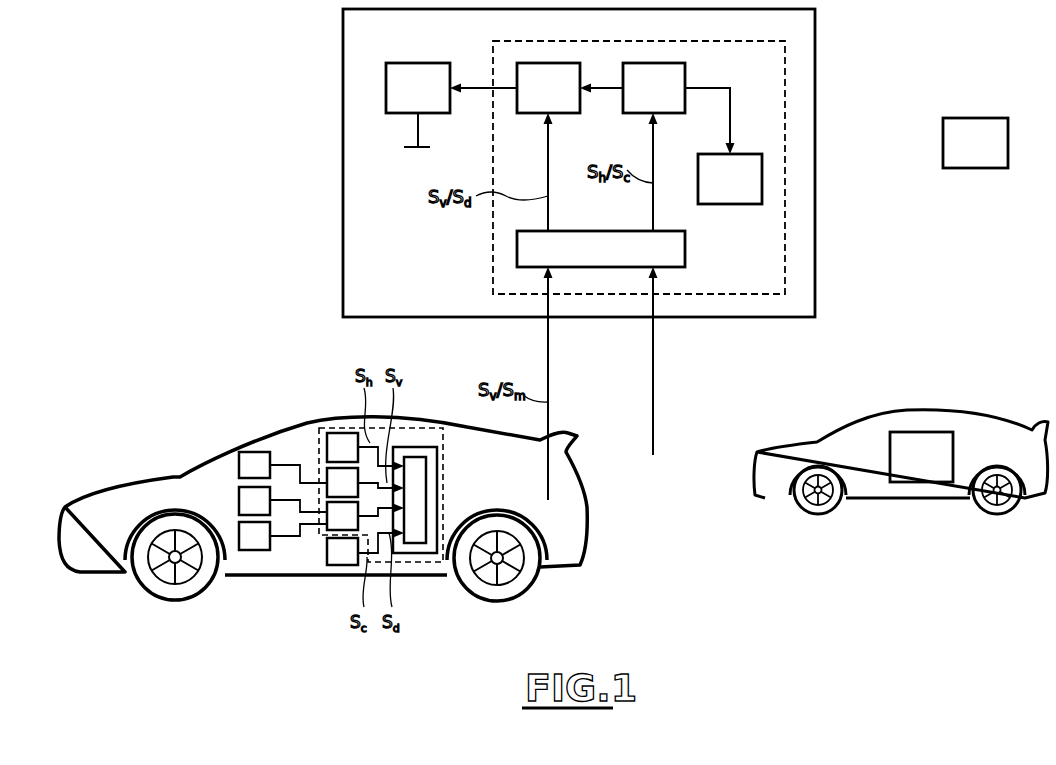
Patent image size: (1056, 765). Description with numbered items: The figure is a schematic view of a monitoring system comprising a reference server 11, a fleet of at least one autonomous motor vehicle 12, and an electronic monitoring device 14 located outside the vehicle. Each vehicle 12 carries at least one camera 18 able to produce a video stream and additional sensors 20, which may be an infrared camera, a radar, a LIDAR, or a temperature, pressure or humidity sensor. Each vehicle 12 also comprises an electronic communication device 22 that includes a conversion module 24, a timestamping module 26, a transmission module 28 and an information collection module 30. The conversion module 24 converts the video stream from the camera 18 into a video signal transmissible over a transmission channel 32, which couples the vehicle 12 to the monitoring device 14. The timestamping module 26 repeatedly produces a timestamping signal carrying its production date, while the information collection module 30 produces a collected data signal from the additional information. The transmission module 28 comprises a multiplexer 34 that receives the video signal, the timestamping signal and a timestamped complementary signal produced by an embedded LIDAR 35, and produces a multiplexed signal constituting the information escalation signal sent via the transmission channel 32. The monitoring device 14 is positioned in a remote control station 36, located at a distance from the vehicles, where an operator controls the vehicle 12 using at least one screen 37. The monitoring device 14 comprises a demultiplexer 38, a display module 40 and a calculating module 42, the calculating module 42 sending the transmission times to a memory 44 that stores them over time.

The reference server 11 is at (975, 143).
The vehicle 12 is at (156, 428).
The electronic monitoring device 14 is at (785, 63).
The camera 18 is at (283, 467).
The additional sensor 20 is at (283, 518).
The electronic communication device 22 is at (418, 568).
The conversion module 24 is at (365, 482).
The timestamping module 26 is at (365, 452).
The transmission module 28 is at (437, 447).
The information collection module 30 is at (365, 516).
The transmission channel 32 is at (532, 342).
The multiplexer 34 is at (426, 490).
The LIDAR 35 is at (365, 547).
The remote control station 36 is at (342, 53).
The screen 37 is at (418, 105).
The demultiplexer 38 is at (601, 249).
The display module 40 is at (548, 88).
The calculating module 42 is at (654, 88).
The memory 44 is at (730, 179).